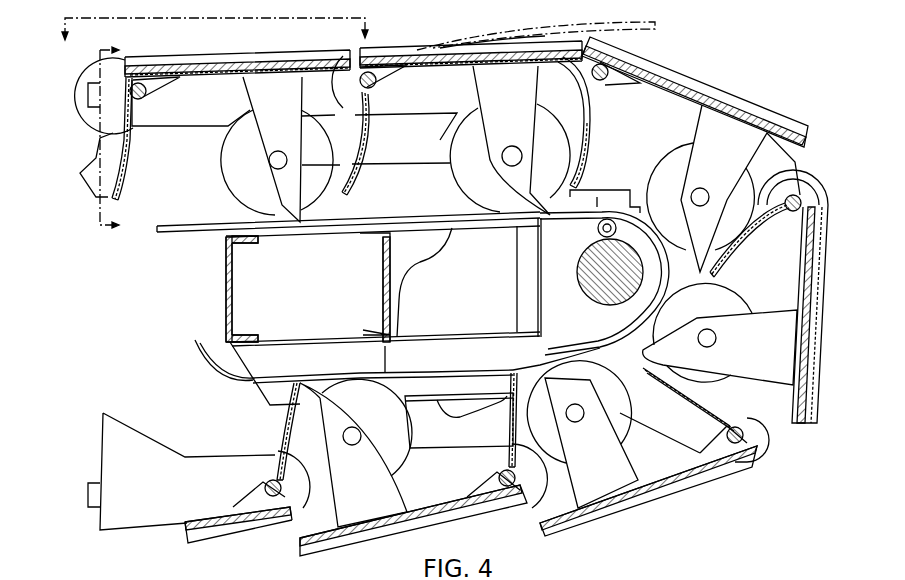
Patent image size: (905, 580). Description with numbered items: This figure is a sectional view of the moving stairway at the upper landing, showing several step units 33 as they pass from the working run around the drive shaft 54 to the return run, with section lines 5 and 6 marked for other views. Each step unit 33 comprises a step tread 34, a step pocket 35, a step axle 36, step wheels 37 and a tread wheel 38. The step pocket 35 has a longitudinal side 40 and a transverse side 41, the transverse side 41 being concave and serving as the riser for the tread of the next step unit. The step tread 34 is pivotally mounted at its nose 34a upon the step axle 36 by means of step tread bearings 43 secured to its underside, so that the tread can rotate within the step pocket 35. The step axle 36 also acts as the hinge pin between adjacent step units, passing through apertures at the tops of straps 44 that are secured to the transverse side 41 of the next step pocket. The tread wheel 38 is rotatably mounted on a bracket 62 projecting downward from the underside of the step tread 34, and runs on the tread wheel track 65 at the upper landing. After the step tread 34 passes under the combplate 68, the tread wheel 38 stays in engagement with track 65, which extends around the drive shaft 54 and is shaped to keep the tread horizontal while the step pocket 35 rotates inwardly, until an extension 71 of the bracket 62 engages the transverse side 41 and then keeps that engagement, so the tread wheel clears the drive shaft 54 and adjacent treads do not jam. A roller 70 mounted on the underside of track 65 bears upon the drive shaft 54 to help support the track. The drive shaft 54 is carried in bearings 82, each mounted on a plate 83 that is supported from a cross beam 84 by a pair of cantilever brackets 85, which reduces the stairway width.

The section line 5 is at (213, 39).
The section line 6 is at (116, 138).
The step unit 33 is at (180, 57).
The step tread 34 is at (250, 54).
The nose 34a is at (125, 74).
The step pocket 35 is at (328, 108).
The step axle 36 is at (147, 97).
The step wheel 37 is at (422, 496).
The tread wheel 38 is at (224, 175).
The longitudinal side 40 is at (196, 127).
The transverse side 41 is at (348, 155).
The step tread bearing 43 is at (160, 84).
The strap 44 is at (362, 134).
The drive shaft 54 is at (578, 265).
The bracket 62 is at (243, 100).
The tread wheel track 65 is at (420, 373).
The combplate 68 is at (473, 37).
The roller 70 is at (597, 230).
The extension 71 is at (318, 228).
The bearing 82 is at (594, 212).
The plate 83 is at (535, 259).
The cross beam 84 is at (226, 278).
The cantilever bracket 85 is at (473, 232).